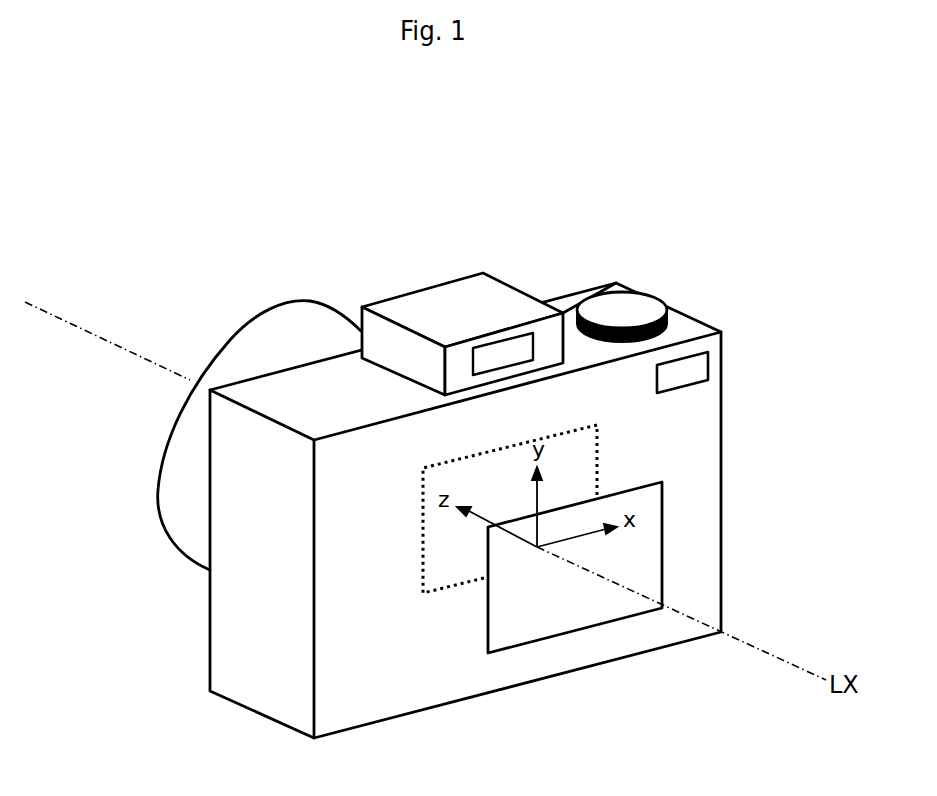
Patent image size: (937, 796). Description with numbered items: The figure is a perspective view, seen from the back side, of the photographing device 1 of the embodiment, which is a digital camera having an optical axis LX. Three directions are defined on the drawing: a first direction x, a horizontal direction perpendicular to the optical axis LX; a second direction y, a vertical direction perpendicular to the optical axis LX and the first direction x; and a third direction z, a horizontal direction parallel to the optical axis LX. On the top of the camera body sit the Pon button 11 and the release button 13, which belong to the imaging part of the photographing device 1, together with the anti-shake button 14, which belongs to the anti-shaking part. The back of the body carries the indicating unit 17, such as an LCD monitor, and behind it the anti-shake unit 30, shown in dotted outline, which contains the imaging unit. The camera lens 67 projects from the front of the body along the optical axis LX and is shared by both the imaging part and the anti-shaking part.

The photographing device 1 is at (465, 475).
The Pon button 11 is at (719, 357).
The release button 13 is at (635, 296).
The anti-shake button 14 is at (462, 312).
The indicating unit 17 is at (596, 556).
The anti-shake unit 30 is at (534, 487).
The camera lens 67 is at (259, 413).